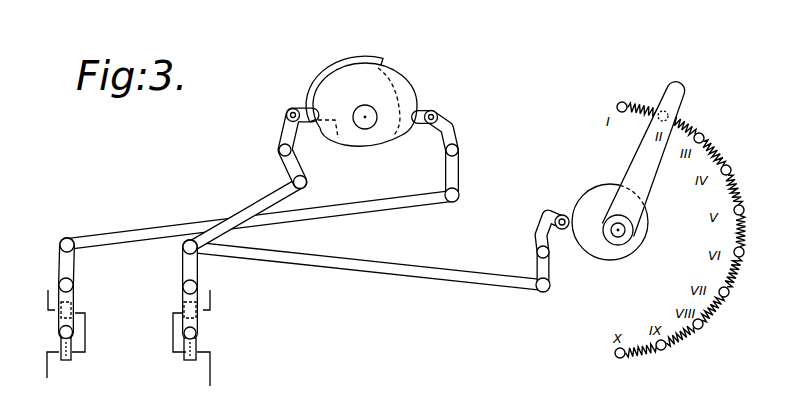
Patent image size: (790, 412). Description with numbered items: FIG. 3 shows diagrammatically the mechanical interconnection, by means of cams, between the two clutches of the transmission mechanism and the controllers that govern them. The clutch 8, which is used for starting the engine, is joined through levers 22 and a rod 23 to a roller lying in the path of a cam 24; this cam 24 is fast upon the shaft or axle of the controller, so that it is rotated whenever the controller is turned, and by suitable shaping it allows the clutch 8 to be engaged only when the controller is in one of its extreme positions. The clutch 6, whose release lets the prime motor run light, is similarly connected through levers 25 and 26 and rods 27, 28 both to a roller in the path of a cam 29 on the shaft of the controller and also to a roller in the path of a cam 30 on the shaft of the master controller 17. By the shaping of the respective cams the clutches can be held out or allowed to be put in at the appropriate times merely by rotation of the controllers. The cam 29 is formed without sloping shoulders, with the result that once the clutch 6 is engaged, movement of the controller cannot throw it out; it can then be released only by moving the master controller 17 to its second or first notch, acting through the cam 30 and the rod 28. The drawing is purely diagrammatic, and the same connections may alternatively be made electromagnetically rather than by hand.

The clutch 6 is at (205, 350).
The clutch 8 is at (52, 350).
The master controller 17 is at (648, 163).
The levers 22 is at (457, 172).
The rod 23 is at (115, 245).
The cam 24 is at (405, 95).
The lever 25 is at (193, 272).
The lever 26 is at (297, 163).
The rod 27 is at (242, 220).
The rod 28 is at (365, 262).
The cam 29 is at (367, 52).
The cam 30 is at (590, 200).